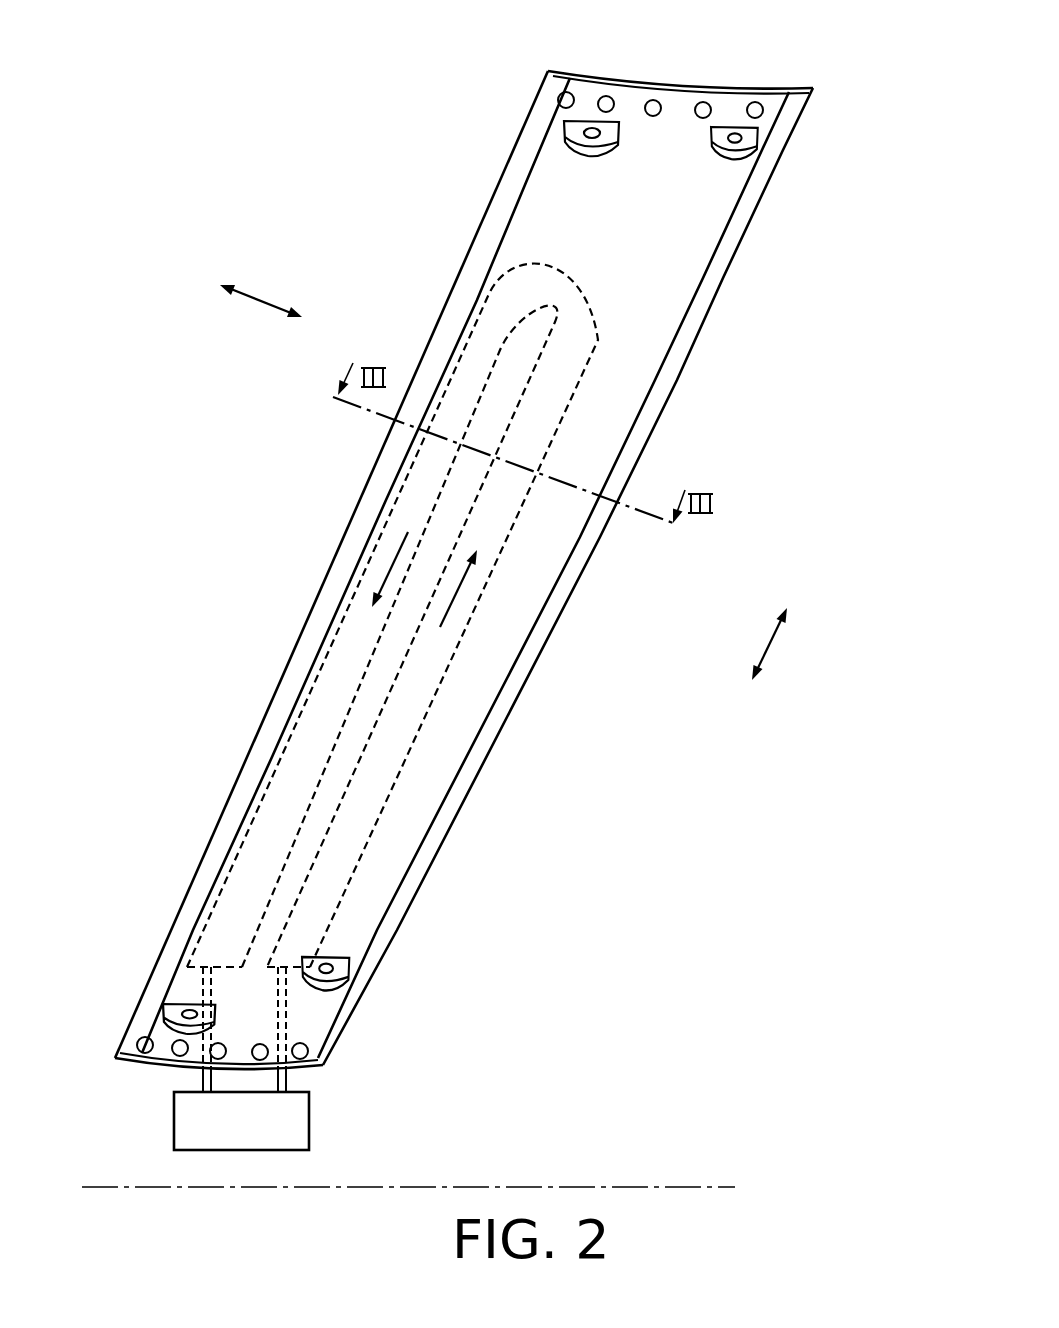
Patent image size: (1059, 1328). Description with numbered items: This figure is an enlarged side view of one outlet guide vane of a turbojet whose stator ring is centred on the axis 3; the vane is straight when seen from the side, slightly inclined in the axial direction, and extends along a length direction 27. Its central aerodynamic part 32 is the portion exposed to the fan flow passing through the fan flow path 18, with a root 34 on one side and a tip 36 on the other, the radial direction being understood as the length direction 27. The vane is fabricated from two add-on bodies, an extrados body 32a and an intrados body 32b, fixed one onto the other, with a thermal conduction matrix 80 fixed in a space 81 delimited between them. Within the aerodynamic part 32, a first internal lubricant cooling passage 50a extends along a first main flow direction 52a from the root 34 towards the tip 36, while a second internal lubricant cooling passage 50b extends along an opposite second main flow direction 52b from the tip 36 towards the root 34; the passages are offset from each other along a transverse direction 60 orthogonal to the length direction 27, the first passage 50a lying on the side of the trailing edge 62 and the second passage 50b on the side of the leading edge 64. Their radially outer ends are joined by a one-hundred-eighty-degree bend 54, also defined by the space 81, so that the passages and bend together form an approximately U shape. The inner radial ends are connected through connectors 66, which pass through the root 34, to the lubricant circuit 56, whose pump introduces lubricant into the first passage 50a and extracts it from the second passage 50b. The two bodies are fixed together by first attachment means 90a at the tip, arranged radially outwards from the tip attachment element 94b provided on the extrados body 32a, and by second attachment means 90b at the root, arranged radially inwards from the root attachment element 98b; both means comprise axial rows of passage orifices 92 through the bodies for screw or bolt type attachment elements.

The axis 3 is at (690, 1185).
The fan flow path 18 is at (588, 931).
The length direction 27 is at (772, 643).
The aerodynamic part 32 is at (195, 876).
The extrados body 32a is at (645, 331).
The intrados body 32b is at (716, 86).
The root 34 is at (301, 1071).
The tip 36 is at (806, 124).
The first internal lubricant cooling passage 50a is at (433, 708).
The second internal lubricant cooling passage 50b is at (293, 730).
The first main flow direction 52a is at (463, 587).
The second main flow direction 52b is at (391, 572).
The 180° bend 54 is at (560, 284).
The lubricant circuit 56 is at (311, 1122).
The transverse direction 60 is at (258, 298).
The trailing edge 62 is at (458, 790).
The leading edge 64 is at (227, 815).
The connectors 66 is at (203, 985).
The thermal conduction matrix 80 is at (485, 365).
The space 81 is at (543, 436).
The first attachment means 90a is at (648, 33).
The second attachment means 90b is at (148, 1122).
The passage orifices 92 is at (570, 93).
The second tip attachment element 94b is at (582, 146).
The second root attachment element 98b is at (165, 1020).